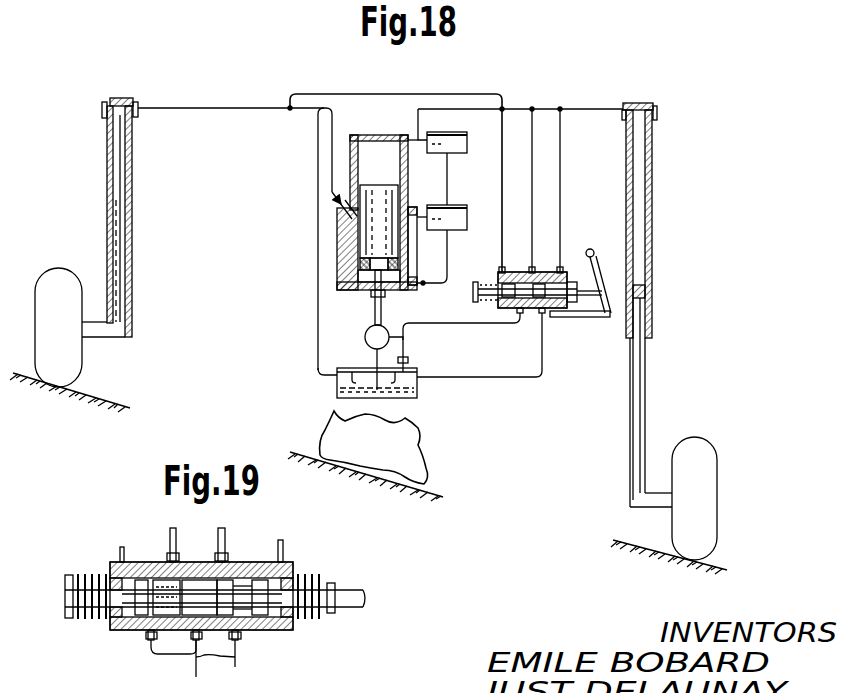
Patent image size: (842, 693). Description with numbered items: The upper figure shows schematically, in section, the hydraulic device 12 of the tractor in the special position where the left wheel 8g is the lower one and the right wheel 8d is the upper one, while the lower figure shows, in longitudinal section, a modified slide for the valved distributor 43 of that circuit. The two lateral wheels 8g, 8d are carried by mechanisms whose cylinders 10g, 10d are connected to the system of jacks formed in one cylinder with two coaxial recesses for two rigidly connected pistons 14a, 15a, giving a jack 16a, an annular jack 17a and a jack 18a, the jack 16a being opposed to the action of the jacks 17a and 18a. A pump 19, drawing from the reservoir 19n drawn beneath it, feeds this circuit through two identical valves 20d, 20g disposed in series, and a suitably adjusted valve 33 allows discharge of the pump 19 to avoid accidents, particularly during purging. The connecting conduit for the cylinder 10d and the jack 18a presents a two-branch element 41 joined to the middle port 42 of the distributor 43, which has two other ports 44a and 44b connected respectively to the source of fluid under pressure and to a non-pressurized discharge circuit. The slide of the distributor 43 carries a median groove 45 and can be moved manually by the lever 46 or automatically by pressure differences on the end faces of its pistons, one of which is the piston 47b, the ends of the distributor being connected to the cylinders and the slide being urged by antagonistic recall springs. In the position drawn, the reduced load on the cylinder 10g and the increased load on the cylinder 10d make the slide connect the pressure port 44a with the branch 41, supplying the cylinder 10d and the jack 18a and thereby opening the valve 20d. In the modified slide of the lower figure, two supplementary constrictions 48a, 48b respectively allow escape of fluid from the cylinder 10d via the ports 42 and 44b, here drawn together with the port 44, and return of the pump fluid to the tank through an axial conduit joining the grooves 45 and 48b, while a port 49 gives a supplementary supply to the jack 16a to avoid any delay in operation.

In FIG. 18, the wheel 8g is at (58, 273).
In FIG. 18, the cylinder 10g is at (122, 197).
In FIG. 18, the wheel 8d is at (693, 445).
In FIG. 18, the cylinder 10d is at (650, 235).
In FIG. 18, the hydraulic device 12 is at (330, 211).
In FIG. 18, the piston 14a is at (362, 276).
In FIG. 18, the piston 15a is at (363, 253).
In FIG. 18, the jack 16a is at (352, 275).
In FIG. 18, the annular jack 17a is at (352, 230).
In FIG. 18, the jack 18a is at (367, 153).
In FIG. 18, the pump 19 is at (366, 334).
In FIG. 18, the reservoir tank 19n is at (337, 390).
In FIG. 18, the valve 20d is at (462, 146).
In FIG. 18, the valve 20g is at (463, 215).
In FIG. 18, the valve 33 is at (409, 350).
In FIG. 18, the two-branch element 41 is at (532, 111).
In FIG. 18, the middle port 42 is at (538, 272).
In FIG. 19, the middle port 42 is at (228, 545).
In FIG. 18, the distributor 43 is at (568, 274).
In FIG. 19, the return line 44 is at (193, 667).
In FIG. 18, the port 44a is at (520, 324).
In FIG. 18, the port 44b is at (544, 324).
In FIG. 18, the median groove 45 is at (514, 272).
In FIG. 19, the median groove 45 is at (193, 583).
In FIG. 18, the lever 46 is at (591, 249).
In FIG. 19, the piston 47b is at (237, 662).
In FIG. 19, the supplementary constriction 48a is at (248, 630).
In FIG. 19, the supplementary constriction 48b is at (170, 560).
In FIG. 19, the port 49 is at (170, 534).